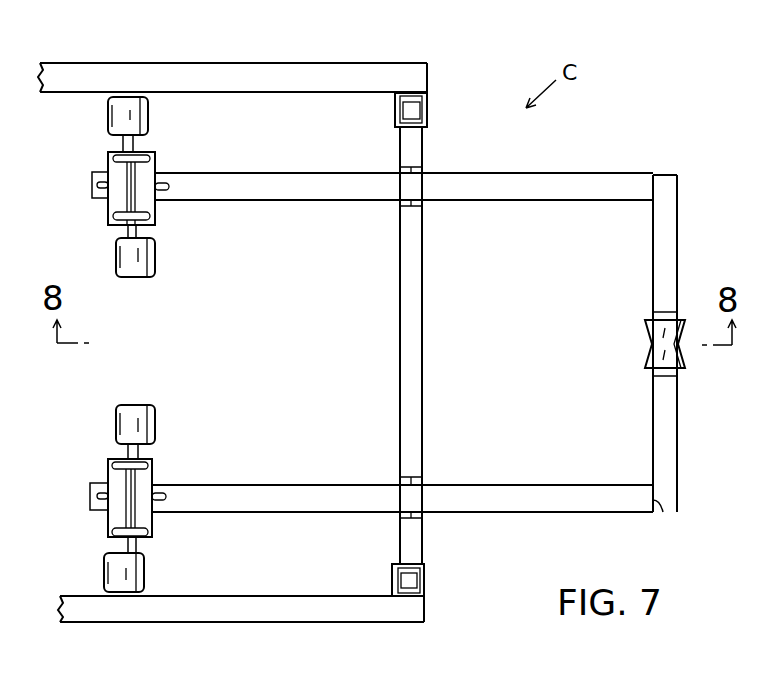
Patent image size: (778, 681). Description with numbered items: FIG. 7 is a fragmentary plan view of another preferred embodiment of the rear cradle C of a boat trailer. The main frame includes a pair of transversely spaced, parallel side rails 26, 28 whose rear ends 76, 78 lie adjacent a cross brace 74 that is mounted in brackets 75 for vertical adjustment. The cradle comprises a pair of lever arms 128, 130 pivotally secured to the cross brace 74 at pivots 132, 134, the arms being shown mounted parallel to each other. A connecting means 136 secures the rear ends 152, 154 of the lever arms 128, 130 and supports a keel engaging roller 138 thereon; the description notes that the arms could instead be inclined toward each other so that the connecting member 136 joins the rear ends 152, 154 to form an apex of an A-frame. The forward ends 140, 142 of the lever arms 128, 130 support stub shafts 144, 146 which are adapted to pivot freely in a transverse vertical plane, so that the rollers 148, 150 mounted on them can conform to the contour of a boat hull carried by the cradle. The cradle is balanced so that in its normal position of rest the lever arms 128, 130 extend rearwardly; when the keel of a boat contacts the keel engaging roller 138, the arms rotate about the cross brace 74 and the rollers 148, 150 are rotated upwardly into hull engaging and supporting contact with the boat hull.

The side rail 26 is at (326, 72).
The side rail 28 is at (289, 617).
The cross brace 74 is at (412, 366).
The brackets 75 is at (429, 108).
The rear end of side rail 76 is at (412, 78).
The rear end of side rail 78 is at (405, 617).
The lever arm 128 is at (530, 184).
The lever arm 130 is at (520, 506).
The pivot 132 is at (412, 208).
The pivot 134 is at (412, 478).
The connecting means 136 is at (668, 440).
The keel engaging roller 138 is at (672, 362).
The forward end of lever arm 140 is at (92, 182).
The forward end of lever arm 142 is at (92, 487).
The stub shaft 144 is at (133, 142).
The stub shaft 146 is at (128, 545).
The roller 148 is at (148, 113).
The roller 150 is at (148, 430).
The rear end of lever arm 152 is at (655, 192).
The rear end of lever arm 154 is at (658, 512).